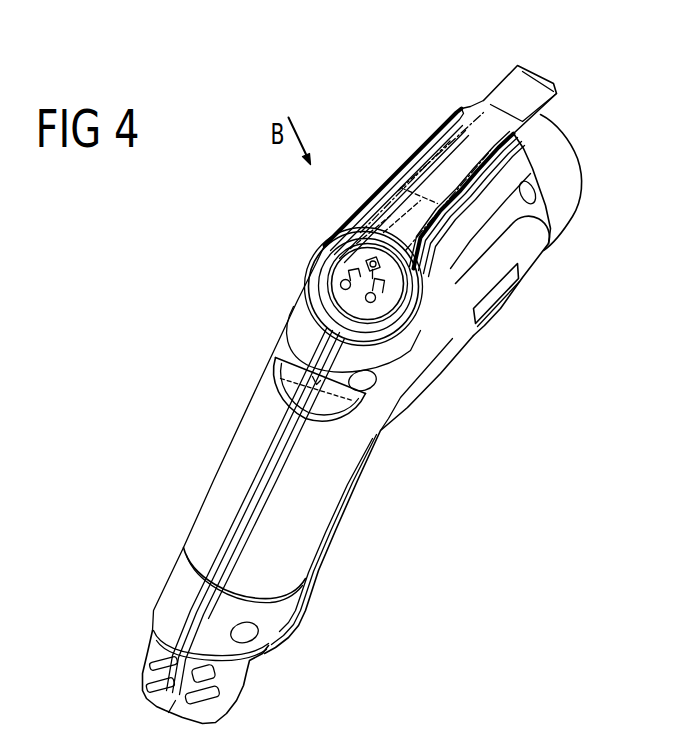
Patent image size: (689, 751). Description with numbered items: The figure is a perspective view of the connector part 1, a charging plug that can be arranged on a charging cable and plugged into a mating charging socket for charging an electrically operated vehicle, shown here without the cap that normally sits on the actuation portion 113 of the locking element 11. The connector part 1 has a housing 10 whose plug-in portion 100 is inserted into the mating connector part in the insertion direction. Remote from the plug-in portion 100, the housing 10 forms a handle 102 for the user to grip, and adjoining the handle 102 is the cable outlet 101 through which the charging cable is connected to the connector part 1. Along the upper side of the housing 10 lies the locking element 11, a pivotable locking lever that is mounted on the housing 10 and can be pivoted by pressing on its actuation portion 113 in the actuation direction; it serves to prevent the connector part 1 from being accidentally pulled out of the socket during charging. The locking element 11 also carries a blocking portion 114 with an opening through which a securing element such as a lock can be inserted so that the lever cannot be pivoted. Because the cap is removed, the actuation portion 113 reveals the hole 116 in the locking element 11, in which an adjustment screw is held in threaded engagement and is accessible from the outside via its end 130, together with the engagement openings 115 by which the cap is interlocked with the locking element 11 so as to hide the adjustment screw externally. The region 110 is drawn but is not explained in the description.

The connector part 1 is at (375, 90).
The housing 10 is at (453, 353).
The locking element 11 is at (438, 163).
The plug-in portion 100 is at (564, 188).
The cable outlet 101 is at (220, 693).
The handle 102 is at (312, 520).
The cap 110 is at (533, 85).
The actuation portion 113 is at (383, 237).
The blocking portion 114 is at (308, 380).
The engagement openings 115 is at (350, 266).
The hole 116 is at (377, 266).
The end 130 is at (370, 260).